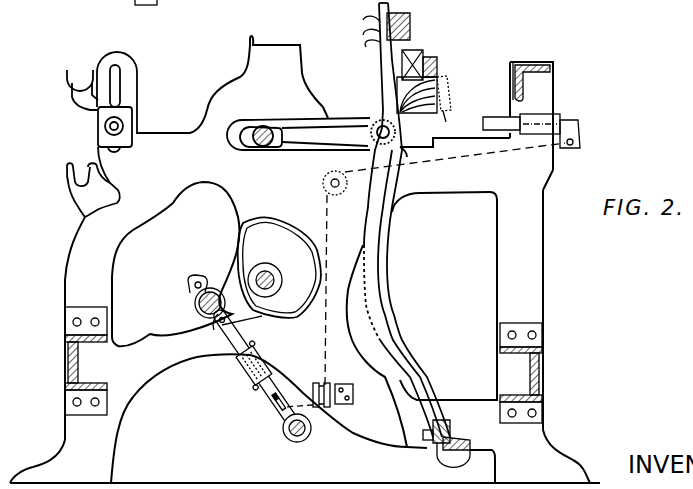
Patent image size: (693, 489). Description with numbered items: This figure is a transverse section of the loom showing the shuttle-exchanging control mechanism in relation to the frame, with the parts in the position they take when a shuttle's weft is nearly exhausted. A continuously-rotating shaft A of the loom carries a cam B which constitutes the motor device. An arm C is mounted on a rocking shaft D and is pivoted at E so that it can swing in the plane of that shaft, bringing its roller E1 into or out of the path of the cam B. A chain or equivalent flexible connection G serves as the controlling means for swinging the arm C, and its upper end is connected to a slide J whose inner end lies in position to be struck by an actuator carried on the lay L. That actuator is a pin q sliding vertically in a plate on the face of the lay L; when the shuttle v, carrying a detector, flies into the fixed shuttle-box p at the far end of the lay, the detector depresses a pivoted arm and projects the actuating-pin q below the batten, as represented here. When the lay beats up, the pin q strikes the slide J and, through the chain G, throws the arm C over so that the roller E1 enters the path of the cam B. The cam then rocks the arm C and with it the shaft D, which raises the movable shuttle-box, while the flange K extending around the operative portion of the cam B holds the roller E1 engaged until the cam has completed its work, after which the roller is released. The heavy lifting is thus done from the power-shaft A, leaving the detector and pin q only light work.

The continuously-rotating shaft A is at (273, 287).
The cam B is at (271, 270).
The arm C is at (195, 298).
The rocking shaft D is at (303, 436).
The pivot E is at (243, 378).
The roller E1 is at (212, 314).
The chain G is at (330, 229).
The slide J is at (576, 121).
The flange K is at (289, 224).
The lay L is at (445, 87).
The fixed shuttle-box p is at (430, 53).
The actuating-pin q is at (451, 108).
The shuttle v is at (417, 52).